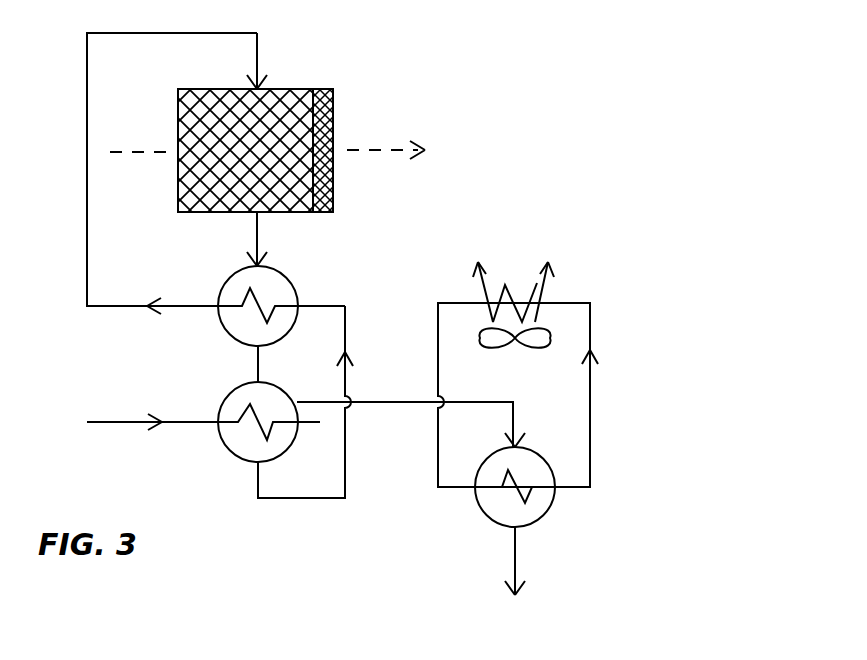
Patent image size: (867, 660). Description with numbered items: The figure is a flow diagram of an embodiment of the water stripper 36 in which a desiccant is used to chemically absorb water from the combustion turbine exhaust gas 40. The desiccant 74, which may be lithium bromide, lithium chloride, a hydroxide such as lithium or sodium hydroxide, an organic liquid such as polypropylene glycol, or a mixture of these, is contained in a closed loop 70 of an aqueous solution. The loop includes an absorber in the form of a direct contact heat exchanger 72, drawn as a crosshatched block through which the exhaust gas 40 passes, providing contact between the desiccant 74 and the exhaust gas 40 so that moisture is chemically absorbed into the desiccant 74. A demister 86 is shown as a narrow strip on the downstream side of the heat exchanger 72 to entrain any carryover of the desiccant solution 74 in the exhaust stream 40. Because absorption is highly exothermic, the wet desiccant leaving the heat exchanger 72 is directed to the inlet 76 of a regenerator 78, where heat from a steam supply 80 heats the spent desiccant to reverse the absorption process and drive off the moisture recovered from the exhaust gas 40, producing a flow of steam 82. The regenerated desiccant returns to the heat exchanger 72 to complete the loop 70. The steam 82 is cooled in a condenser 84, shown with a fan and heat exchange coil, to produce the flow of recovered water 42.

The closed loop 70 is at (404, 52).
The direct contact heat exchanger 72 is at (300, 88).
The desiccant 74 is at (178, 110).
The demister 86 is at (323, 113).
The combustion turbine exhaust gas 40 is at (150, 160).
The water stripper 36 is at (460, 213).
The inlet 76 is at (255, 385).
The regenerator 78 is at (222, 400).
The steam supply 80 is at (122, 420).
The steam 82 is at (375, 400).
The condenser 84 is at (433, 508).
The recovered water 42 is at (518, 540).